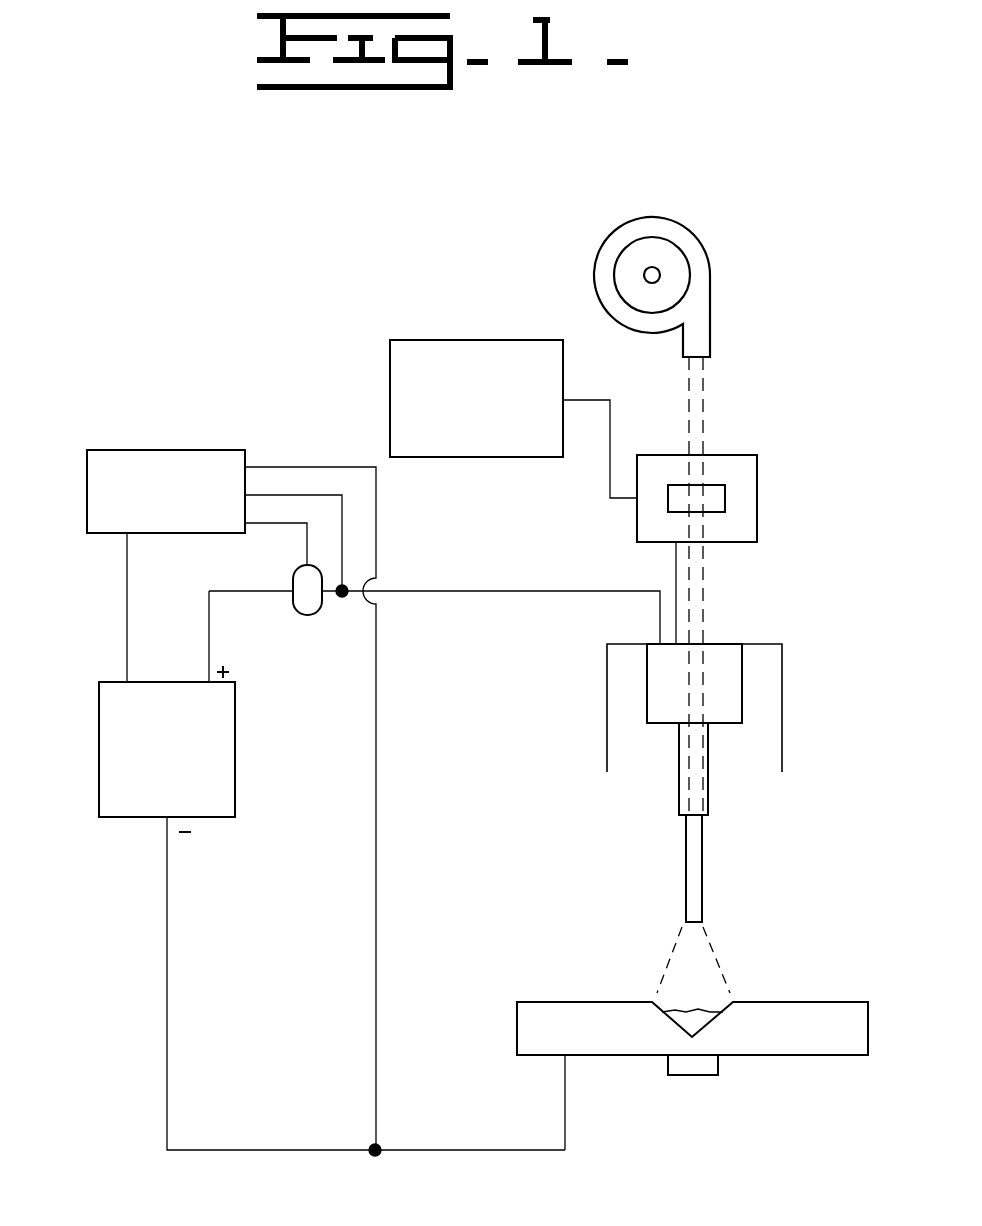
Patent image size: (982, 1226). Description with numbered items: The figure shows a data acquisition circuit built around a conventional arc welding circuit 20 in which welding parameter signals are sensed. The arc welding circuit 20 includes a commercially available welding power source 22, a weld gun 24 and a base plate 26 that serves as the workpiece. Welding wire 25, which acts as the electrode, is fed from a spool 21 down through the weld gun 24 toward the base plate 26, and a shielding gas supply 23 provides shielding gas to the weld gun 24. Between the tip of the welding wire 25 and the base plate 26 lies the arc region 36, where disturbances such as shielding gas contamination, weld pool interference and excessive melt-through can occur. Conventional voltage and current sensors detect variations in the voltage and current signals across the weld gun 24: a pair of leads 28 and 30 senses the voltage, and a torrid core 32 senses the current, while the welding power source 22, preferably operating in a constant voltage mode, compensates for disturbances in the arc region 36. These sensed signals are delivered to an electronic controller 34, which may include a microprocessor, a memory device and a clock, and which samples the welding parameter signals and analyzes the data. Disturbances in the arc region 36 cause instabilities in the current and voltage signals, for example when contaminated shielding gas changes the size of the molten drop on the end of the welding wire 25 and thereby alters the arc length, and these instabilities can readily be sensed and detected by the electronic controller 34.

The arc welding circuit 20 is at (482, 248).
The wire spool 21 is at (705, 245).
The welding power source 22 is at (99, 733).
The shielding gas supply 23 is at (510, 340).
The weld gun 24 is at (747, 612).
The welding wire 25 is at (703, 862).
The base plate 26 is at (763, 1058).
The lead 28 is at (376, 900).
The lead 30 is at (297, 493).
The torrid core 32 is at (307, 535).
The electronic controller 34 is at (182, 450).
The arc region 36 is at (670, 957).